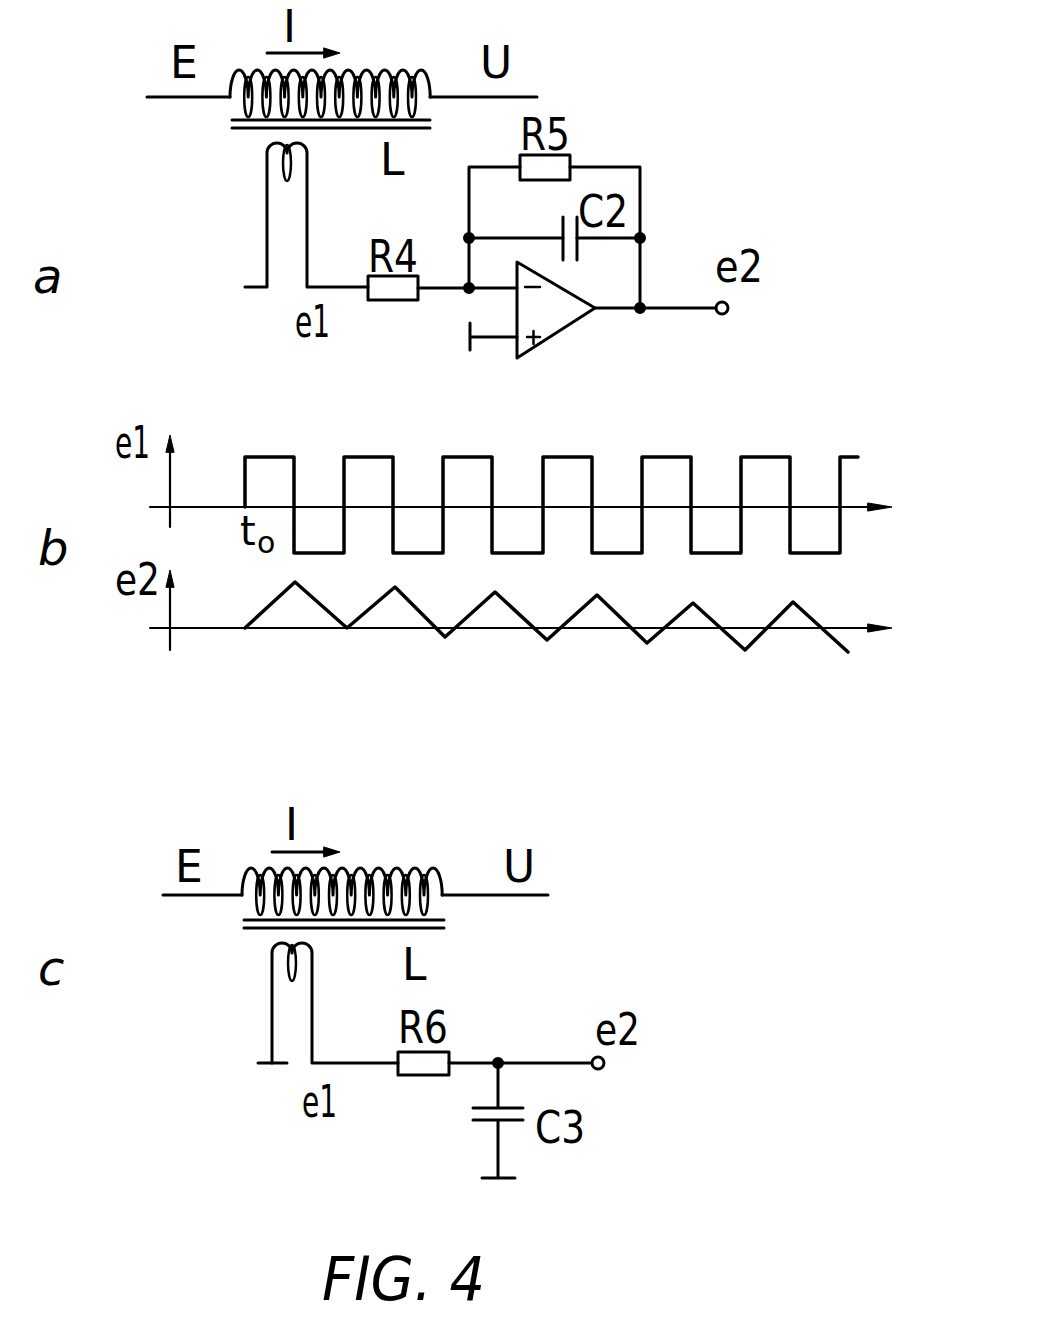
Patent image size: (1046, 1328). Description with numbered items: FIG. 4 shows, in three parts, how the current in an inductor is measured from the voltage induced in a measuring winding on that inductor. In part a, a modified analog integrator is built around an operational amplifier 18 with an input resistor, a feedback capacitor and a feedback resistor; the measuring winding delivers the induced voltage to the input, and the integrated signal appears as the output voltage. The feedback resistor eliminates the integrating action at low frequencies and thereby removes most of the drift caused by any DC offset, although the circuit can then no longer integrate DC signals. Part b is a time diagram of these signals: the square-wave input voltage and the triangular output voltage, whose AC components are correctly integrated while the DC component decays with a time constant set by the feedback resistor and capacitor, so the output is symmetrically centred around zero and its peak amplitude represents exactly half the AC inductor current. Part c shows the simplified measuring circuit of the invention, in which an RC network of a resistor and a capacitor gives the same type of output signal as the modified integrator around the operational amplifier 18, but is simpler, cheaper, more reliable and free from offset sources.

The operational amplifier 18 is at (566, 327).